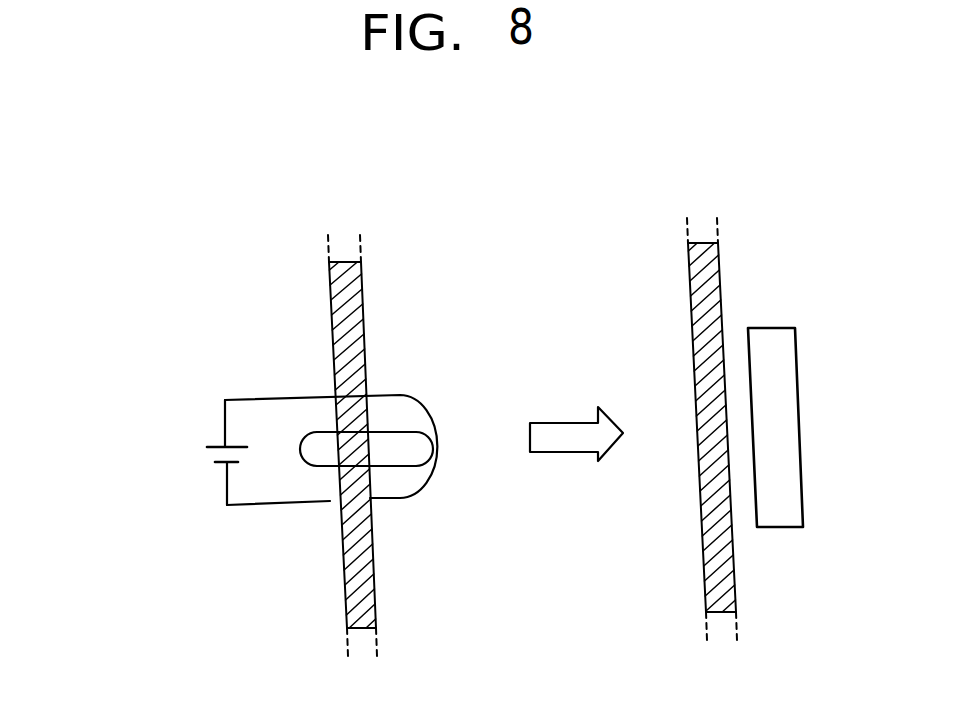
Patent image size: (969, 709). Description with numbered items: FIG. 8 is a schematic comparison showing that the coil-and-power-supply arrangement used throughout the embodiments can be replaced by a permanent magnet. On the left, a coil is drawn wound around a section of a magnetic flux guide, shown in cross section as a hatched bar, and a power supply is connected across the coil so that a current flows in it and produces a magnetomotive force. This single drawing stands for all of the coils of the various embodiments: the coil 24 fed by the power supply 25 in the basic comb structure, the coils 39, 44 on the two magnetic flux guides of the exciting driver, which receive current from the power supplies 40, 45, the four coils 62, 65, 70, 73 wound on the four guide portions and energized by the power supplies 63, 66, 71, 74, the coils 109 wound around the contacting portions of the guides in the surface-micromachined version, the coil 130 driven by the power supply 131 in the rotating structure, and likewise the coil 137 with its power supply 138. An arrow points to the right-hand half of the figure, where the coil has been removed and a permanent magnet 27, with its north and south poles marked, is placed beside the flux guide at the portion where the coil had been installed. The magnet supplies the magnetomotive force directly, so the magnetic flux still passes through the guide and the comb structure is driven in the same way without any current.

The power supply 131 is at (163, 393).
The power source 138 is at (163, 393).
The power supply 63 is at (163, 393).
The power supply 66 is at (163, 393).
The power supply 71 is at (163, 393).
The power supply 74 is at (163, 393).
The power supply 25 is at (163, 393).
The power supply 40 is at (163, 393).
The power supply 45 is at (213, 446).
The coil 24 is at (246, 517).
The coil 39 is at (246, 517).
The coil 44 is at (246, 517).
The coil 62 is at (246, 517).
The coil 65 is at (246, 517).
The coil 70 is at (246, 517).
The coil 73 is at (246, 517).
The coils 109 is at (246, 517).
The coil 130 is at (246, 517).
The coil 137 is at (328, 488).
The magnet 27 is at (792, 423).